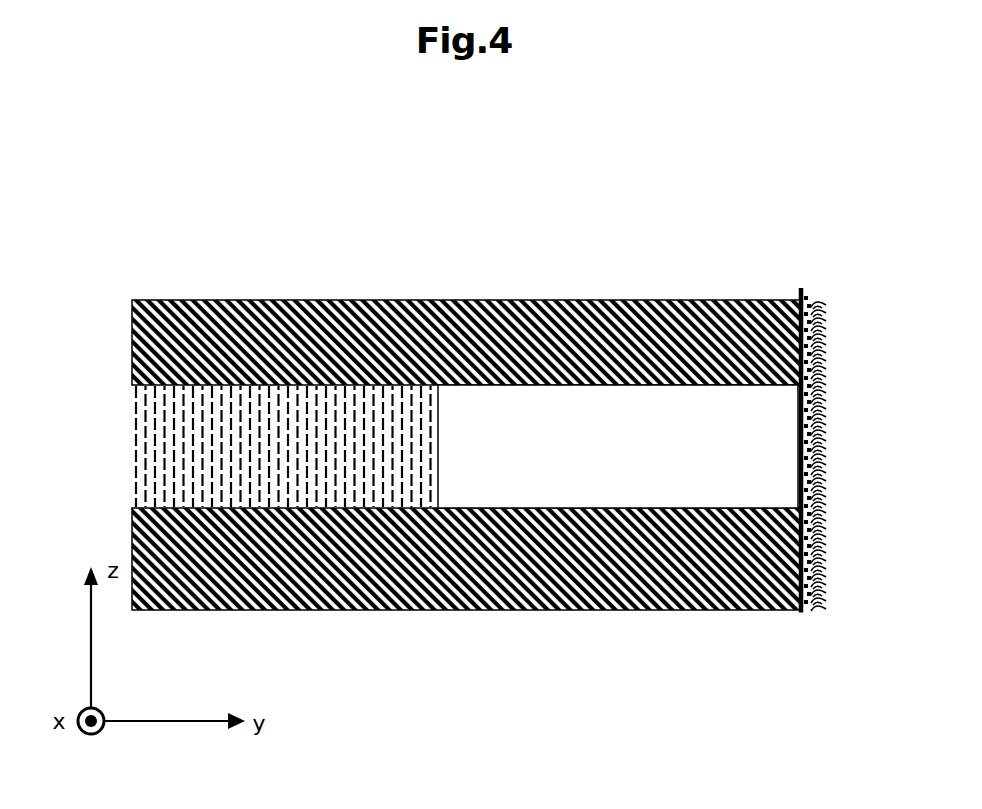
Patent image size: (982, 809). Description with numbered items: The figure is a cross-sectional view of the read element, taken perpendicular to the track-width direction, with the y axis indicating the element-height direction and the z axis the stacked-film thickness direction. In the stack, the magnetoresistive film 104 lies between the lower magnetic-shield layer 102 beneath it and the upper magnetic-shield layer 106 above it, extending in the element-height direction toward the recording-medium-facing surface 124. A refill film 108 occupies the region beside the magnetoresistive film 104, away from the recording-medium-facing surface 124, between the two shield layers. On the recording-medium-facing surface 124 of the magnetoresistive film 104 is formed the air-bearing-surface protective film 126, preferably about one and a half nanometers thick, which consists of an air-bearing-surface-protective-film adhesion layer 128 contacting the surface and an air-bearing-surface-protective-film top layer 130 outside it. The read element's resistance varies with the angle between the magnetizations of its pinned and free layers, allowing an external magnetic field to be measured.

The lower magnetic-shield layer 102 is at (497, 580).
The magnetoresistive film 104 is at (536, 410).
The upper magnetic-shield layer 106 is at (421, 337).
The refill film 108 is at (160, 443).
The recording-medium-facing surface 124 is at (801, 628).
The air-bearing-surface protective film 126 is at (816, 366).
The air-bearing-surface-protective-film adhesion layer 128 is at (806, 295).
The air-bearing-surface-protective-film top layer 130 is at (845, 400).